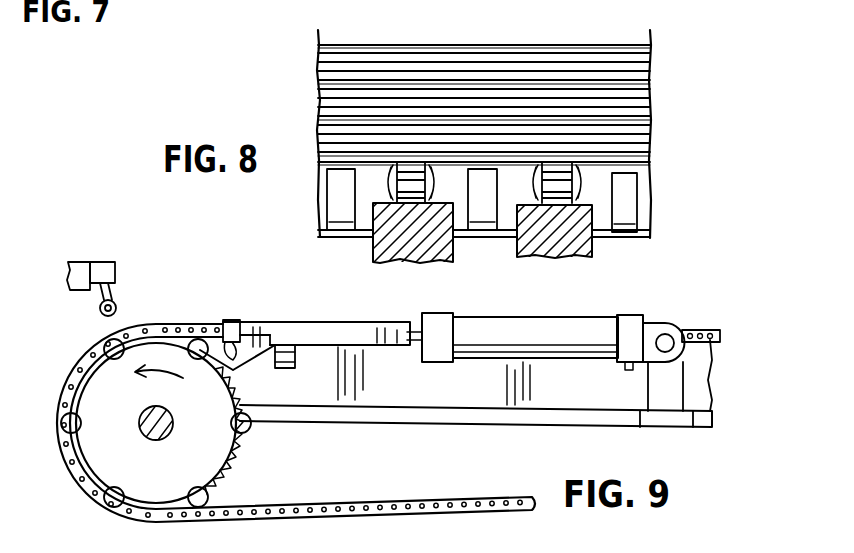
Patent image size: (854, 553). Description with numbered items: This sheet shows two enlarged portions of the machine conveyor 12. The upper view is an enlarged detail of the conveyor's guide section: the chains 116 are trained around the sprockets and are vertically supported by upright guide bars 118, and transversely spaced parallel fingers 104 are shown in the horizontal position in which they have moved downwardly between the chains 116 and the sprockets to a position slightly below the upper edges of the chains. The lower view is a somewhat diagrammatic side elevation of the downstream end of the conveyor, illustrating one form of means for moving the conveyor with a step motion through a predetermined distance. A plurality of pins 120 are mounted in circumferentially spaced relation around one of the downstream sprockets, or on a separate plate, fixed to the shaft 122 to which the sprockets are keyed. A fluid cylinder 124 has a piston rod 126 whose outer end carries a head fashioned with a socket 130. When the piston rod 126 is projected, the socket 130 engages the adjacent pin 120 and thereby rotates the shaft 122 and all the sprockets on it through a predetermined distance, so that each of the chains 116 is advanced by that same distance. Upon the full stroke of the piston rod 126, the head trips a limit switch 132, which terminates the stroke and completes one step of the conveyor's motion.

In FIG. 8, the conveyor frame block 12 is at (671, 131).
In FIG. 8, the fingers 104 is at (337, 192).
In FIG. 8, the chains 116 is at (410, 167).
In FIG. 9, the chains 116 is at (82, 368).
In FIG. 8, the upright guide bars 118 is at (392, 235).
In FIG. 9, the upright guide bars 118 is at (497, 410).
In FIG. 9, the pins 120 is at (108, 340).
In FIG. 9, the shaft 122 is at (150, 437).
In FIG. 9, the fluid cylinder 124 is at (550, 350).
In FIG. 9, the piston rod 126 is at (245, 350).
In FIG. 9, the socket 130 is at (228, 322).
In FIG. 9, the limit switch 132 is at (103, 262).